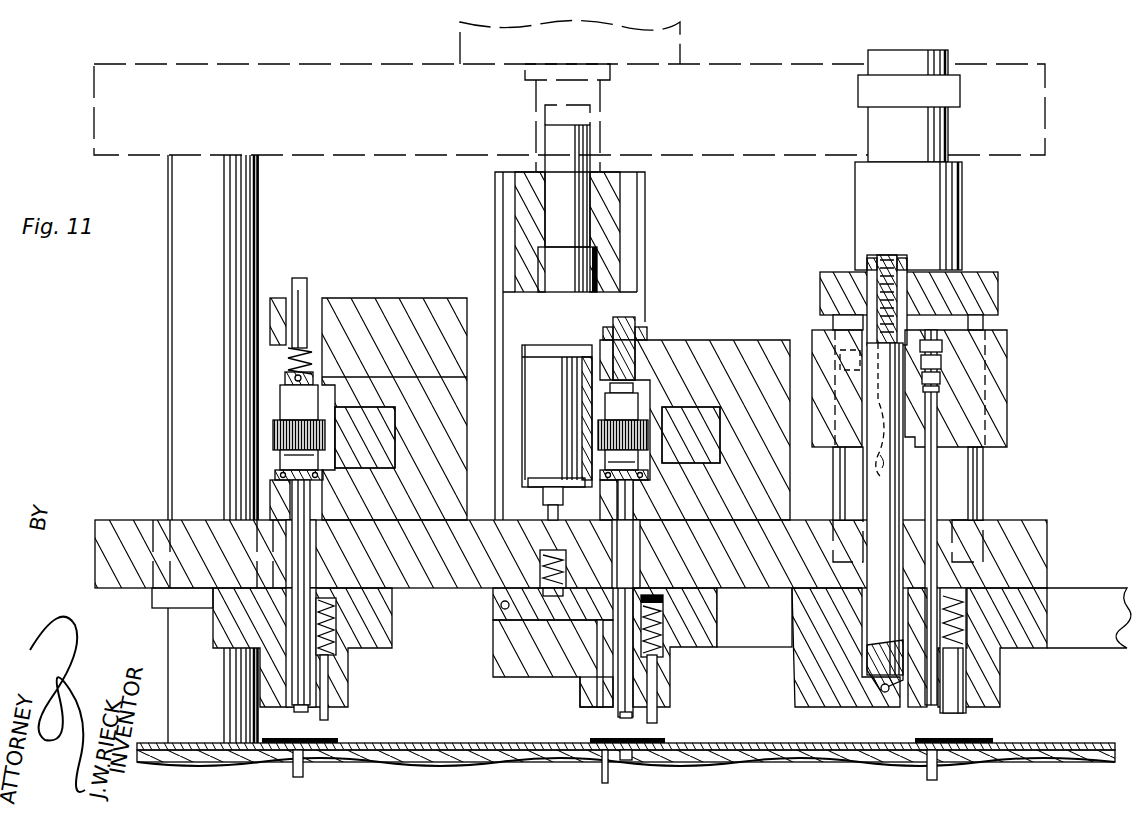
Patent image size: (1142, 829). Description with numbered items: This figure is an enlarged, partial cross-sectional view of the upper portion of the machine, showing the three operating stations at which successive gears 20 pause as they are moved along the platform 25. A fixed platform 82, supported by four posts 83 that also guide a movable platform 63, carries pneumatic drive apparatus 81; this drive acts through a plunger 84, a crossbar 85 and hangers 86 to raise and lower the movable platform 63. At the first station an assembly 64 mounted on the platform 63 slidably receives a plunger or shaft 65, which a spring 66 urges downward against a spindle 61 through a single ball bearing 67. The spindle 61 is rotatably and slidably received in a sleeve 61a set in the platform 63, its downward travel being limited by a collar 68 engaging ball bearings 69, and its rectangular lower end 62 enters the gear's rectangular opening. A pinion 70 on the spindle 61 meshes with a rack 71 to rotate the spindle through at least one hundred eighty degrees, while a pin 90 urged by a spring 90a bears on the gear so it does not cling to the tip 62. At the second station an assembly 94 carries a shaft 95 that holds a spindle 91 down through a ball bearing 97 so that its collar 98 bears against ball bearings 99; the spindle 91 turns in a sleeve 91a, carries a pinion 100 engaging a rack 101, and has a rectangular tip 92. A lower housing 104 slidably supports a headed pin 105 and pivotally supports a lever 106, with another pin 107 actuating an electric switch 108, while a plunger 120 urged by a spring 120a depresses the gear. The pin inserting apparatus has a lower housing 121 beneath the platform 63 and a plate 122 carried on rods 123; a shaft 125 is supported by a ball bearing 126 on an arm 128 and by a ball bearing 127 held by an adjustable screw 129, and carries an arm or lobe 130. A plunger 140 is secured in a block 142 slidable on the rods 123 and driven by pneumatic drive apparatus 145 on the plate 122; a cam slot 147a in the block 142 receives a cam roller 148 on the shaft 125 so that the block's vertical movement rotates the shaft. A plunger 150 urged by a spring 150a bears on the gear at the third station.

The fixed platform 82 is at (188, 64).
The pneumatic drive apparatus 81 is at (460, 52).
The plunger 84 is at (600, 133).
The hangers 86 is at (495, 228).
The crossbar 85 is at (610, 215).
The posts 83 is at (258, 208).
The assembly 64 is at (400, 305).
The rack 71 is at (385, 432).
The plunger or shaft 65 is at (300, 300).
The spring 66 is at (290, 356).
The ball bearing 67 is at (290, 385).
The pinion or gear 70 is at (283, 440).
The collar 68 is at (288, 460).
The ball bearings 69 is at (280, 480).
The movable platform 63 is at (120, 520).
The sleeve 61a is at (310, 575).
The pin 90 is at (330, 716).
The spring 90a is at (335, 635).
The spindle 61 is at (300, 665).
The rectangular lower end 62 is at (295, 710).
The electric switch 108 is at (535, 388).
The pin 107 is at (550, 512).
The assembly 94 is at (712, 345).
The shaft 95 is at (612, 320).
The rack 101 is at (708, 445).
The ball bearing 97 is at (615, 385).
The pinion or gear 100 is at (612, 433).
The collar 98 is at (615, 463).
The ball bearings 99 is at (540, 478).
The spindle 91 is at (620, 557).
The rectangular tip 92 is at (620, 715).
The sleeve 91a is at (640, 573).
The lever 106 is at (497, 612).
The lower housing 104 is at (500, 645).
The headed pin 105 is at (605, 685).
The spring 120a is at (660, 640).
The plunger 120 is at (657, 720).
The lower housing 121 is at (800, 605).
The arm 128 is at (830, 700).
The pneumatic drive apparatus 145 is at (935, 210).
The plate 122 is at (978, 290).
The adjustable screw 129 is at (878, 265).
The rods 123 is at (850, 492).
The ball bearing 127 is at (830, 355).
The cam slot 147a is at (885, 370).
The block 142 is at (987, 395).
The shaft 125 is at (880, 500).
The ball bearing 126 is at (885, 693).
The cam roller 148 is at (870, 466).
The plunger 140 is at (930, 463).
The arm or lobe 130 is at (925, 700).
The spring 150a is at (960, 632).
The plunger 150 is at (958, 714).
The platform 25 is at (470, 743).
The gears 20 is at (338, 741).